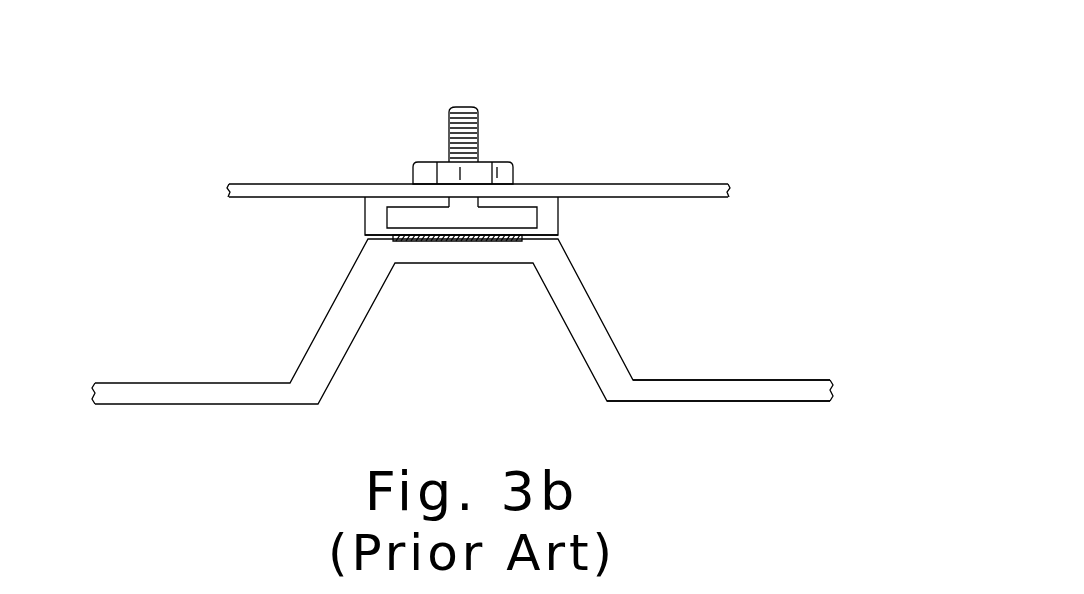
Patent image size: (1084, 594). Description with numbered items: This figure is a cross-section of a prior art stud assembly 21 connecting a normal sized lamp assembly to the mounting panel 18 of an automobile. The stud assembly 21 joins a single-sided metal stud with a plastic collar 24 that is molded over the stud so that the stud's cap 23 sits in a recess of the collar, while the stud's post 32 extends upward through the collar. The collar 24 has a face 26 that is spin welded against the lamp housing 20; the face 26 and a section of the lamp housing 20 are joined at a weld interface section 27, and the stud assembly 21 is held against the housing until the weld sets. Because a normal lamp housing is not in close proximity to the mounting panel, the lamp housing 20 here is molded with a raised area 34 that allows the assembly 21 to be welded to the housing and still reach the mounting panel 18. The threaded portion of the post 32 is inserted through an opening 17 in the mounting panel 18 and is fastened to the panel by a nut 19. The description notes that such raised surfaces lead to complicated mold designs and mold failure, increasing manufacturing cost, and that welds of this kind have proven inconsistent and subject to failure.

The opening 17 is at (445, 203).
The mounting panel 18 is at (675, 183).
The nut 19 is at (497, 162).
The lamp housing 20 is at (772, 398).
The stud assembly 21 is at (437, 92).
The cap 23 is at (530, 212).
The collar 24 is at (363, 218).
The face 26 is at (555, 237).
The weld interface section 27 is at (437, 240).
The post 32 is at (487, 117).
The raised area 34 is at (598, 320).